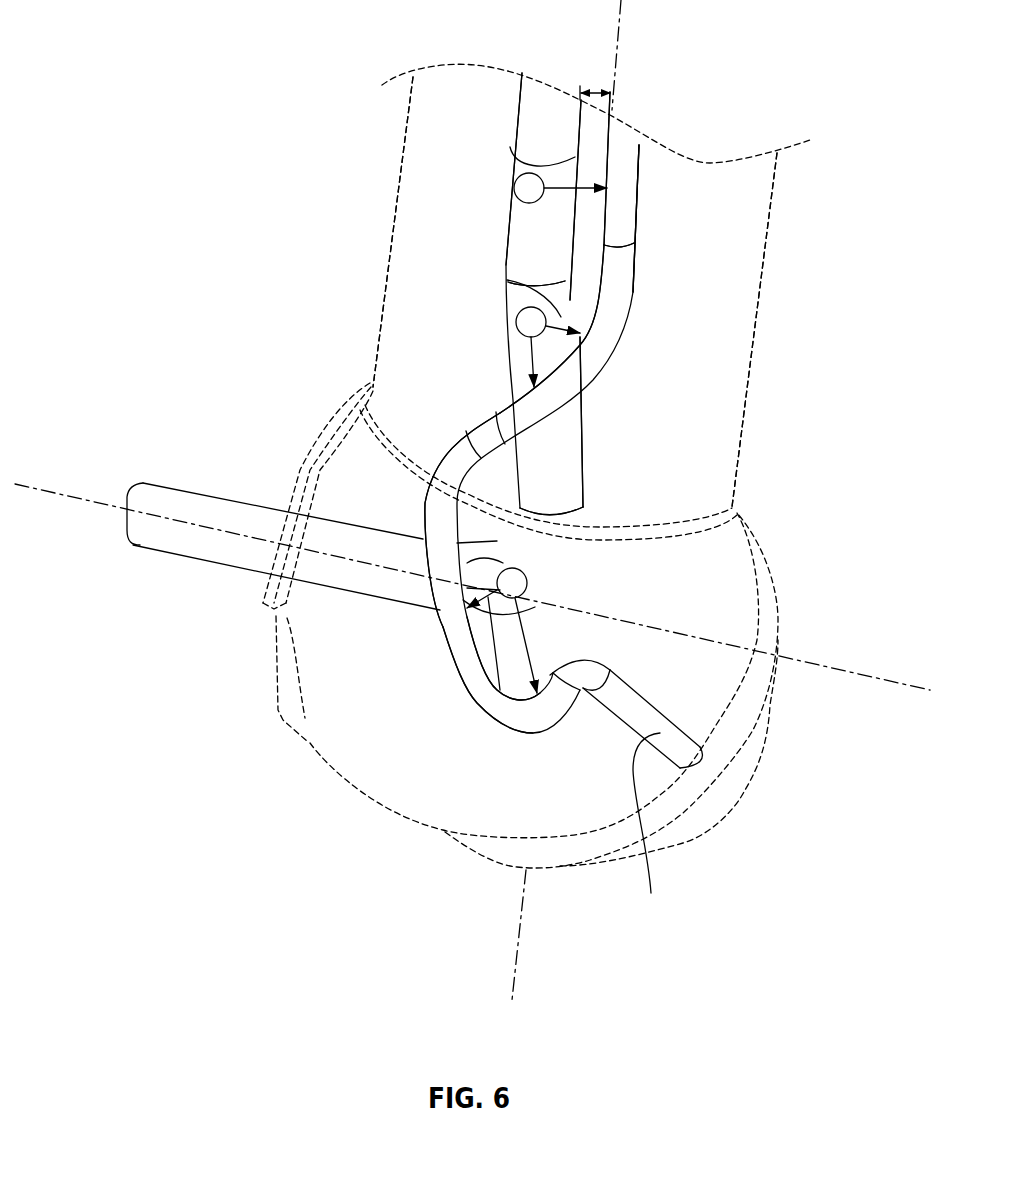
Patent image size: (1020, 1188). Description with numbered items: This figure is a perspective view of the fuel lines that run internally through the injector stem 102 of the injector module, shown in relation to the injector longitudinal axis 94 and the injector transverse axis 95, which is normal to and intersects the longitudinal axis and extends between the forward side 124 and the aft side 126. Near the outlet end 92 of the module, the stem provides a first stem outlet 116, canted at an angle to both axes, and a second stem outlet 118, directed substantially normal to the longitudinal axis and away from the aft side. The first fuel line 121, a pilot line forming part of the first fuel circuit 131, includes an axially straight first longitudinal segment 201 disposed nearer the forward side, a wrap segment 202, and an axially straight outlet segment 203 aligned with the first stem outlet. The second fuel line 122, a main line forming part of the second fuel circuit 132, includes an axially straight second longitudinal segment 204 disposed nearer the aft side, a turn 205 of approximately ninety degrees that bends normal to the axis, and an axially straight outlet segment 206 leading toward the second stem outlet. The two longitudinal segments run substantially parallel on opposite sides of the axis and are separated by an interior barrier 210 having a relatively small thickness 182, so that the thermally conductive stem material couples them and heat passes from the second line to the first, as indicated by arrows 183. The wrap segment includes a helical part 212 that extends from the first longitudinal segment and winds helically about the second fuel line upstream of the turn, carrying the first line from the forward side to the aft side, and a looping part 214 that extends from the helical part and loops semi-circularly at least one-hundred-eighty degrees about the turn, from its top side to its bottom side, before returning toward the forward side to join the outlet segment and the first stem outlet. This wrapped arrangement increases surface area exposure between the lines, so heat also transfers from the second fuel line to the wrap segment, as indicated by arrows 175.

The outlet end 92 is at (443, 830).
The injector longitudinal axis 94 is at (627, 3).
The injector transverse axis 95 is at (848, 670).
The injector stem 102 is at (750, 372).
The first stem outlet 116 is at (702, 757).
The second stem outlet 118 is at (132, 493).
The first fuel line 121 is at (619, 268).
The second fuel line 122 is at (507, 183).
The forward side 124 is at (772, 193).
The aft side 126 is at (377, 342).
The first fuel circuit 131 is at (645, 176).
The second fuel circuit 132 is at (507, 143).
The arrows 175 is at (507, 280).
The thickness 182 is at (593, 91).
The arrows 183 is at (562, 185).
The first longitudinal segment 201 is at (623, 198).
The wrap segment 202 is at (437, 515).
The outlet segment 203 is at (654, 830).
The second longitudinal segment 204 is at (537, 260).
The turn 205 is at (552, 547).
The outlet segment 206 is at (390, 586).
The interior barrier 210 is at (593, 157).
The helical part 212 is at (567, 377).
The looping part 214 is at (465, 650).